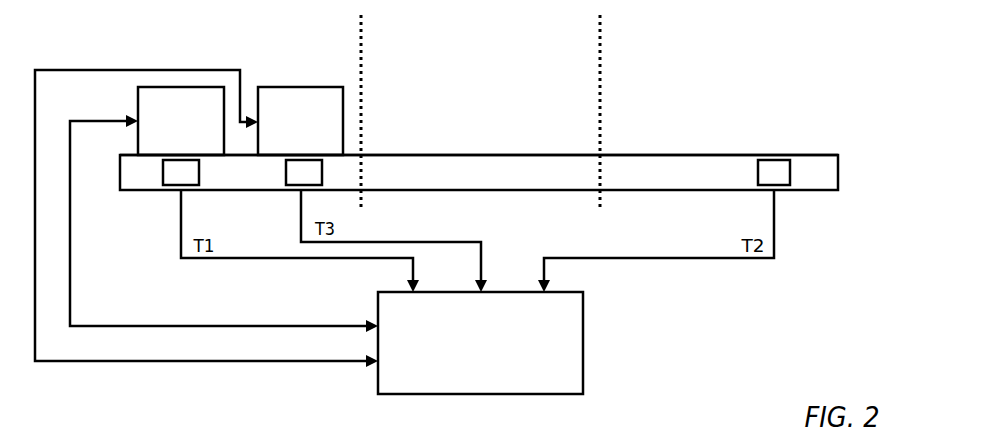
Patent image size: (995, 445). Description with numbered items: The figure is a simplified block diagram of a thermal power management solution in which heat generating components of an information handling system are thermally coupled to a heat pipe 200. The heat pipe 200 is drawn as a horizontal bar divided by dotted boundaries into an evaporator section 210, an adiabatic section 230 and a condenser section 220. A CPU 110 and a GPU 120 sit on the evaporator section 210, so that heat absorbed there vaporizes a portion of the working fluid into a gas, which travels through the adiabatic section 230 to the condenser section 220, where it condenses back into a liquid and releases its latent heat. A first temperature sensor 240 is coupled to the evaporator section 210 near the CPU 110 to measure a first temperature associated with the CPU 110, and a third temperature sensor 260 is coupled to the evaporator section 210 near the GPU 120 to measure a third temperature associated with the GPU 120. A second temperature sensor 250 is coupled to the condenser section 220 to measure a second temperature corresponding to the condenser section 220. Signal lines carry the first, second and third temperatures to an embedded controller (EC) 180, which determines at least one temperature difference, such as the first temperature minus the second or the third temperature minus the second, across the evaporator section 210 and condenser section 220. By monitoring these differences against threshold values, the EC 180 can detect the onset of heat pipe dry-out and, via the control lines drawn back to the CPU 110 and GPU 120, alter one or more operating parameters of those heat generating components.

The heat pipe 200 is at (479, 152).
The evaporator section 210 is at (240, 112).
The adiabatic section 230 is at (480, 88).
The condenser section 220 is at (719, 112).
The CPU 110 is at (165, 145).
The GPU 120 is at (283, 145).
The first temperature sensor 240 is at (146, 193).
The third temperature sensor 260 is at (267, 193).
The second temperature sensor 250 is at (738, 193).
The embedded controller (EC) 180 is at (463, 381).